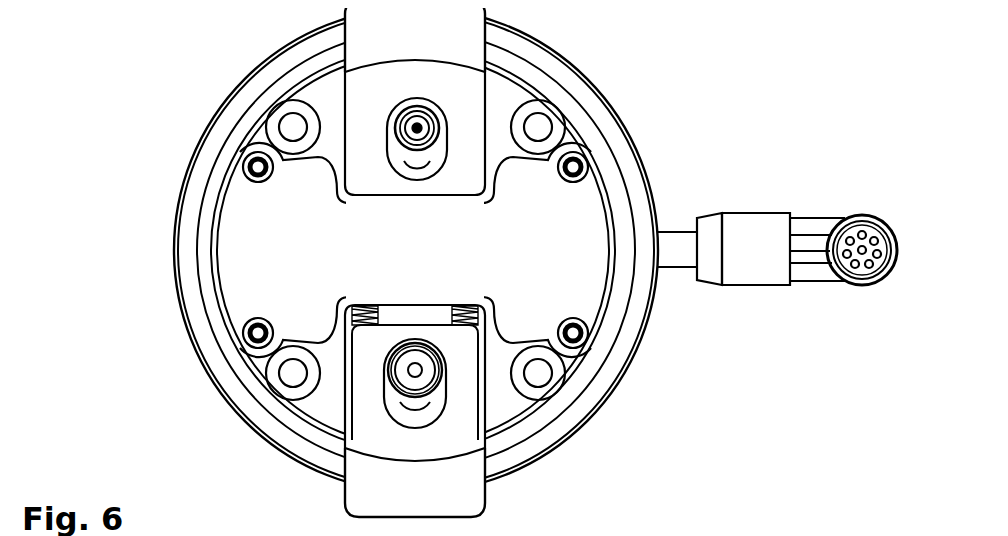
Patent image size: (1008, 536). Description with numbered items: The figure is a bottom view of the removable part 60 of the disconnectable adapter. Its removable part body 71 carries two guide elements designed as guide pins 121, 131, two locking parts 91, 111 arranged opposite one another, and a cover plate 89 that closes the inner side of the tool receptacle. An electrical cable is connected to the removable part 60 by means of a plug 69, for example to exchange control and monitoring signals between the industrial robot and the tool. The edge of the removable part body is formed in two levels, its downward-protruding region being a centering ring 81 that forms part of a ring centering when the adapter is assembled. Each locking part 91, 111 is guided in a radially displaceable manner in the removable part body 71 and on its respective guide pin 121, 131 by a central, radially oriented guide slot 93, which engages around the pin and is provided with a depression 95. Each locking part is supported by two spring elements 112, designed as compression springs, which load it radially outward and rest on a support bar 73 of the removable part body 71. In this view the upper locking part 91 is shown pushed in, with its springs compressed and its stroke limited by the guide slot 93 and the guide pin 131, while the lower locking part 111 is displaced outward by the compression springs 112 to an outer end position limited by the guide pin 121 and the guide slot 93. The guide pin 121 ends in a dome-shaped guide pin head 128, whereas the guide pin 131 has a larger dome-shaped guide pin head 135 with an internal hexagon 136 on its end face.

The removable part 60 is at (166, 203).
The plug 69 is at (755, 230).
The removable part body 71 is at (185, 228).
The support bar 73 is at (430, 301).
The centering ring 81 is at (210, 297).
The cover plate 89 is at (368, 240).
The locking part 91 is at (372, 24).
The guide slot 93 is at (387, 157).
The depression 95 is at (438, 162).
The locking part 111 is at (380, 468).
The spring element 112 is at (357, 323).
The guide pin 121 is at (403, 355).
The guide pin head 128 is at (412, 372).
The guide pin 131 is at (258, 118).
The guide pin head 135 is at (398, 123).
The internal hexagon 136 is at (397, 134).